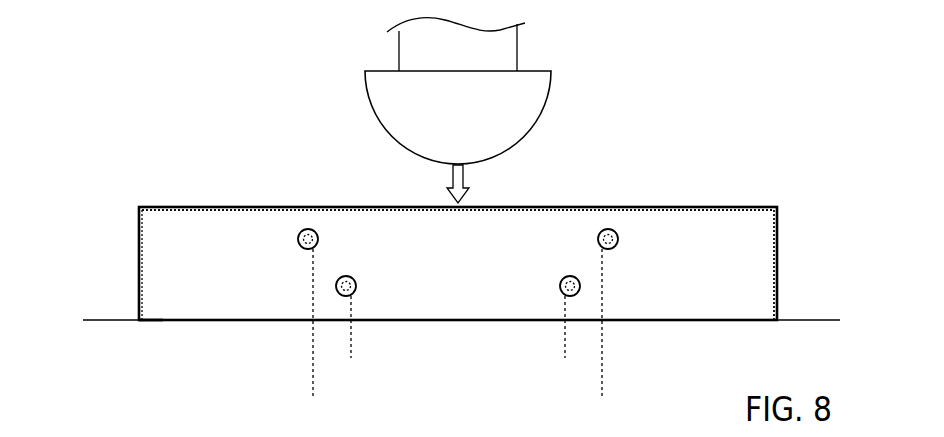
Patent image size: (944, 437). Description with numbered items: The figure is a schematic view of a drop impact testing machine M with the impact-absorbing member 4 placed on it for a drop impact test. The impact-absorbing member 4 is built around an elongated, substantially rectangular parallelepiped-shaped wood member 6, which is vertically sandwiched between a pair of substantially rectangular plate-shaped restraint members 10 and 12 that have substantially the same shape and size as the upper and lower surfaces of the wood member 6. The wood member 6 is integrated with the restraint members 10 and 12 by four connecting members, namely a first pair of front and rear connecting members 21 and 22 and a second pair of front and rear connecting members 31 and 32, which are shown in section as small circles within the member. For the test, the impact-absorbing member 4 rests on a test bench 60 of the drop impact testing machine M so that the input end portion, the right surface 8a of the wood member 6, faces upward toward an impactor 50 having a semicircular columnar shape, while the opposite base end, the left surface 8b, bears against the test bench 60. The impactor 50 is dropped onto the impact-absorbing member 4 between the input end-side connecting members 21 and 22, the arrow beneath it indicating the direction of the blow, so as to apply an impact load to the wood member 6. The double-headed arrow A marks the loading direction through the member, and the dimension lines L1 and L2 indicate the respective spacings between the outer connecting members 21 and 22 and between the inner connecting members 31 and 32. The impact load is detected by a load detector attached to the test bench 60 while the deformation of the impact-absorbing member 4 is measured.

The restraint member 10 is at (468, 226).
The restraint member 12 is at (718, 207).
The right surface 8a is at (231, 207).
The left surface 8b is at (163, 320).
The wood member 6 is at (779, 228).
The test bench 60 is at (808, 320).
The impactor 50 is at (553, 104).
The drop impact testing machine M is at (656, 91).
The impact-absorbing member 4 is at (675, 162).
The connecting member 21 is at (300, 248).
The connecting member 22 is at (615, 247).
The connecting member 31 is at (341, 296).
The connecting member 32 is at (575, 296).
The thickness direction A is at (741, 230).
The distance between outer conductors L1 is at (313, 391).
The distance between inner conductors L2 is at (351, 353).